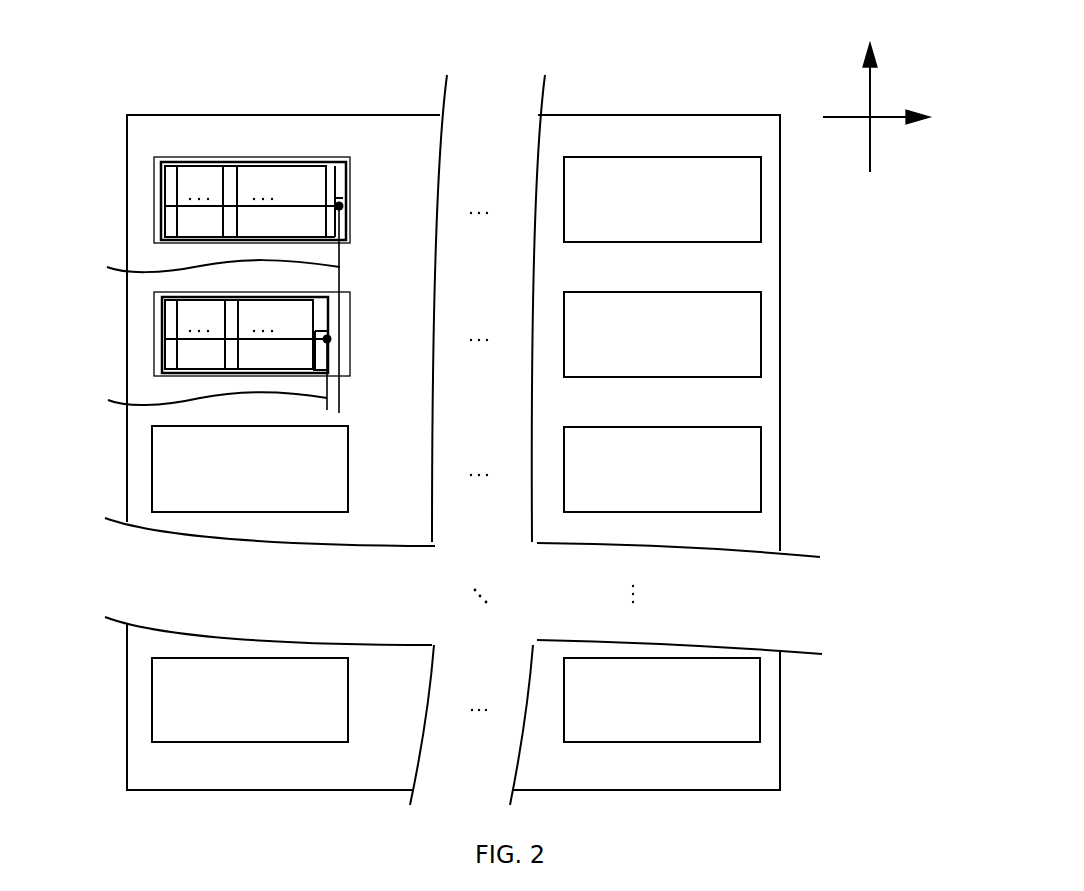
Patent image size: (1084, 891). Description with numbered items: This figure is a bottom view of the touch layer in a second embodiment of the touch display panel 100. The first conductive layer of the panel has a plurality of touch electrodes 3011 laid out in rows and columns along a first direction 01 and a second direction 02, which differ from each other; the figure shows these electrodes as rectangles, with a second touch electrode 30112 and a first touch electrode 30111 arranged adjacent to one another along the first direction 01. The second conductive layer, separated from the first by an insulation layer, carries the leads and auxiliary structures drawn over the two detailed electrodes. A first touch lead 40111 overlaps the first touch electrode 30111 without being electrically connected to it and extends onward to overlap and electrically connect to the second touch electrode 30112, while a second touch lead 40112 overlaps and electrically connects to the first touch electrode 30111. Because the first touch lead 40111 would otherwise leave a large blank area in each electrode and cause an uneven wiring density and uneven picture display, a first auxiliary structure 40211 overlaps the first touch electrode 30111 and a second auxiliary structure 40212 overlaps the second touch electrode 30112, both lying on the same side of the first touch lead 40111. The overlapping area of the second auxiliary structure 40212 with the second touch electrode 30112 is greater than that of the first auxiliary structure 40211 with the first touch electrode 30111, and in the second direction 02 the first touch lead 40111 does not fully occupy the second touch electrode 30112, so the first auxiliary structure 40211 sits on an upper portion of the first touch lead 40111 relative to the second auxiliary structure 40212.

The touch display panel 100 is at (192, 95).
The touch electrode 3011 is at (675, 178).
The second touch electrode 30112 is at (161, 175).
The first touch electrode 30111 is at (162, 311).
The second auxiliary structure 40212 is at (165, 206).
The first auxiliary structure 40211 is at (165, 339).
The first touch lead 40111 is at (192, 268).
The second touch lead 40112 is at (186, 403).
The first direction 01 is at (870, 91).
The second direction 02 is at (892, 117).